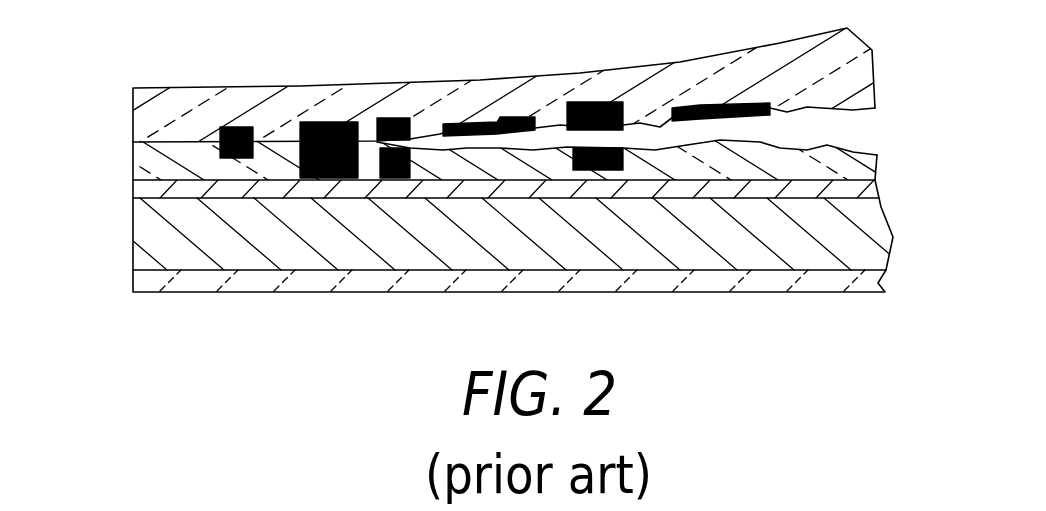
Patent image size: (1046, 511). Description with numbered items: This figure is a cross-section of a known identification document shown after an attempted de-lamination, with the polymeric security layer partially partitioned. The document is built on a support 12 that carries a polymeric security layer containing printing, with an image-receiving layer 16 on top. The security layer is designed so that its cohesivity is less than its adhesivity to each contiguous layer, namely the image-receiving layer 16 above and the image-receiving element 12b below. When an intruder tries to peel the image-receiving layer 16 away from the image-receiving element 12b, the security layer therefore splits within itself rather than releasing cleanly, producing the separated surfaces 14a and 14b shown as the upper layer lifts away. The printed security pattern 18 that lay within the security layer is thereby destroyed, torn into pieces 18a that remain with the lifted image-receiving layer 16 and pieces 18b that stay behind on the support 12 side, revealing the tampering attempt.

The support 12 is at (907, 173).
The image-receiving element 12b is at (131, 187).
The lower surface of upper layer 14a is at (877, 100).
The upper surface of lower layer 14b is at (880, 157).
The image-receiving layer 16 is at (870, 52).
The printed security pattern 18 is at (323, 123).
The piece of security pattern 18a is at (482, 122).
The piece of security pattern 18b is at (488, 152).